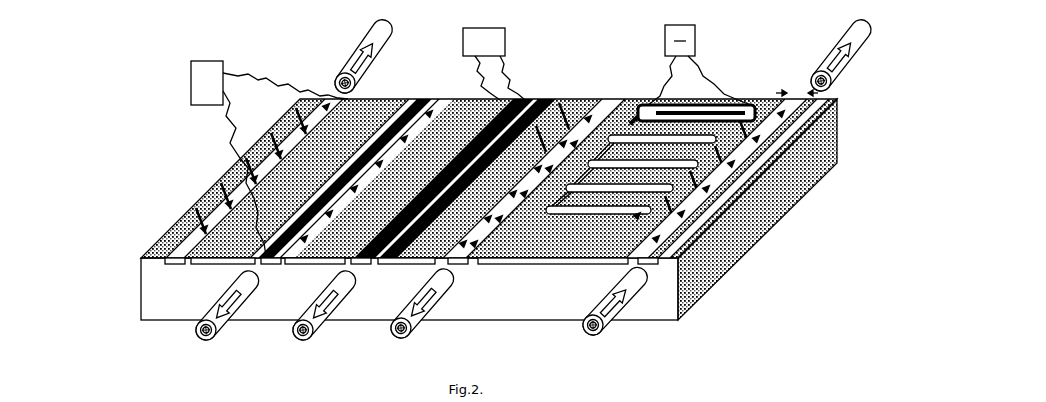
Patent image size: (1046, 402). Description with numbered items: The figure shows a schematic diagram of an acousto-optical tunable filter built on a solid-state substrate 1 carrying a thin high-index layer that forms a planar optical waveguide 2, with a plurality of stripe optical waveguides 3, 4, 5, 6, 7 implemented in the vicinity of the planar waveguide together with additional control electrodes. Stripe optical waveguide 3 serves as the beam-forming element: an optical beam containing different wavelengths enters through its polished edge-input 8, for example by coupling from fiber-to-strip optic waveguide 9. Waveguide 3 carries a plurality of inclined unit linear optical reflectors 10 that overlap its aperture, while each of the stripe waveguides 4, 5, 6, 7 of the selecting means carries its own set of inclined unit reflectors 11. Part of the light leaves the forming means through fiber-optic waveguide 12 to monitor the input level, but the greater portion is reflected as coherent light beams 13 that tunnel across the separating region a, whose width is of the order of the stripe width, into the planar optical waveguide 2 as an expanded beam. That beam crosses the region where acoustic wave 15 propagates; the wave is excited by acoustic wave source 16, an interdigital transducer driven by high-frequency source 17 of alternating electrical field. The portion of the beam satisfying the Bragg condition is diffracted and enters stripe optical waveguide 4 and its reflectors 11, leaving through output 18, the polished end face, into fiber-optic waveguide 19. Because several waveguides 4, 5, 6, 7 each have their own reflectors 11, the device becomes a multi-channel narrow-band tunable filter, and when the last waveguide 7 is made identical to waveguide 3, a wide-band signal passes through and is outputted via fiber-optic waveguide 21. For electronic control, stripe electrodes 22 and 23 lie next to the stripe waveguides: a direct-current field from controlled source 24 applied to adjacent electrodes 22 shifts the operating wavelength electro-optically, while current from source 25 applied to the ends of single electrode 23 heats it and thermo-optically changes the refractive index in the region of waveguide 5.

The solid-state substrate 1 is at (727, 245).
The planar optical waveguide 2 is at (205, 252).
The stripe optical waveguide 3 is at (777, 130).
The stripe optical waveguide 4 is at (593, 100).
The stripe optical waveguide 5 is at (492, 92).
The stripe optical waveguide 6 is at (400, 92).
The stripe optical waveguide 7 is at (187, 230).
The edge-input 8 is at (650, 250).
The fiber-to-strip optic waveguide 9 is at (603, 302).
The inclined unit linear optical reflectors 10 is at (700, 215).
The inclined unit linear optical reflectors 11 is at (223, 185).
The fiber-optic waveguide 12 is at (833, 33).
The coherent light beams 13 is at (733, 123).
The acoustic wave 15 is at (627, 98).
The acoustic wave source 16 is at (687, 95).
The high-frequency source 17 is at (657, 28).
The output 18 is at (267, 252).
The fiber-optic waveguide 19 is at (190, 323).
The fiber-optic waveguide 21 is at (353, 43).
The electrodes 22 is at (497, 93).
The single electrode 23 is at (417, 92).
The controlled source of direct current 24 is at (497, 33).
The current source 25 is at (183, 82).
The separating region a is at (797, 85).